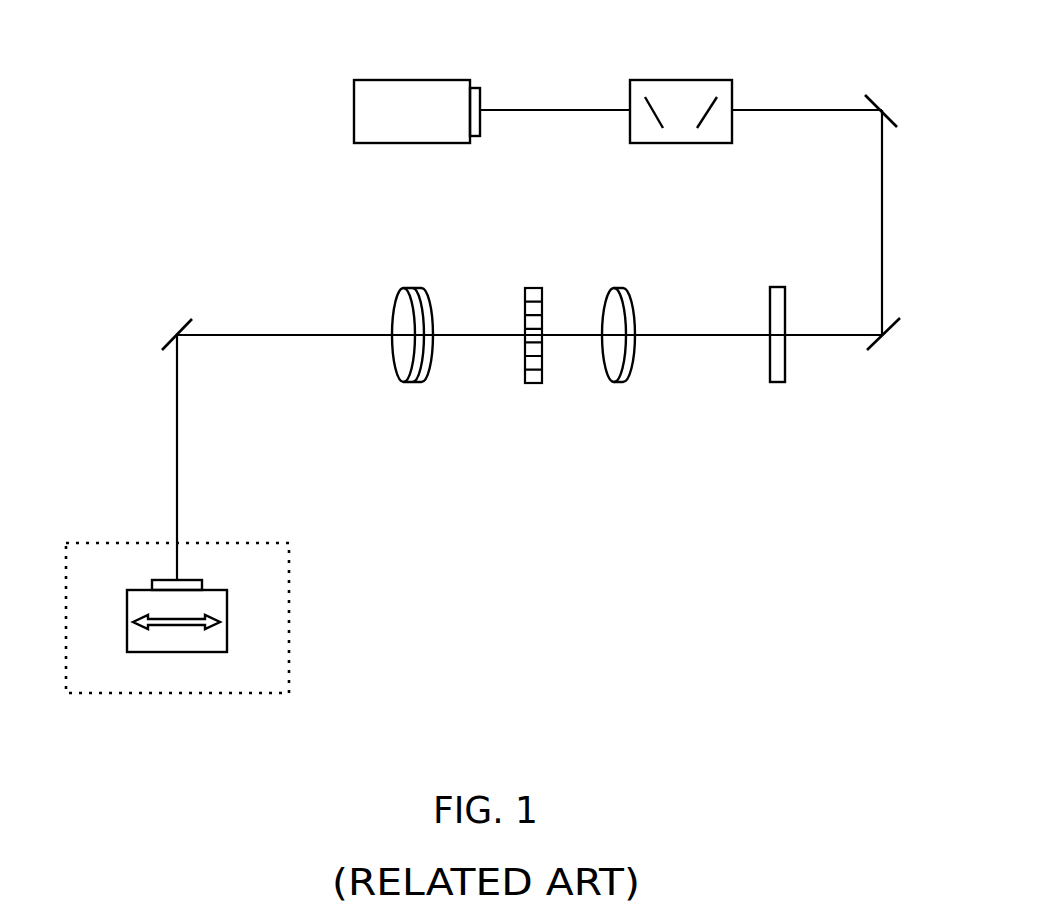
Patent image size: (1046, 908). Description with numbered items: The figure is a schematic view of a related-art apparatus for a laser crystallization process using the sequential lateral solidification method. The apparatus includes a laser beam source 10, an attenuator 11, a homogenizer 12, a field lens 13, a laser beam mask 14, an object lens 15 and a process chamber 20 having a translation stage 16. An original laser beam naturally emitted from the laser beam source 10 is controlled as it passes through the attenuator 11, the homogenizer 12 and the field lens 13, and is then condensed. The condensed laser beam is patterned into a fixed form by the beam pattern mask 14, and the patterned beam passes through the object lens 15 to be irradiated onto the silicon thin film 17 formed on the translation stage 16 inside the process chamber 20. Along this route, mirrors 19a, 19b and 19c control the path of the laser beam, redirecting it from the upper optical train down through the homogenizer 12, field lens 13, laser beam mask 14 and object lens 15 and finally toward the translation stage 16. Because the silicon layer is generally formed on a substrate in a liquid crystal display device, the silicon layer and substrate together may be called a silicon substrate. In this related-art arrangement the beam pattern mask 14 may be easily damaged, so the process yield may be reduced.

The laser beam source 10 is at (415, 97).
The attenuator 11 is at (680, 90).
The homogenizer 12 is at (780, 288).
The field lens 13 is at (623, 288).
The laser beam mask 14 is at (533, 290).
The object lens 15 is at (417, 287).
The translation stage 16 is at (227, 622).
The silicon thin film 17 is at (193, 578).
The mirror 19a is at (873, 100).
The mirror 19b is at (882, 342).
The mirror 19c is at (177, 330).
The process chamber 20 is at (90, 542).